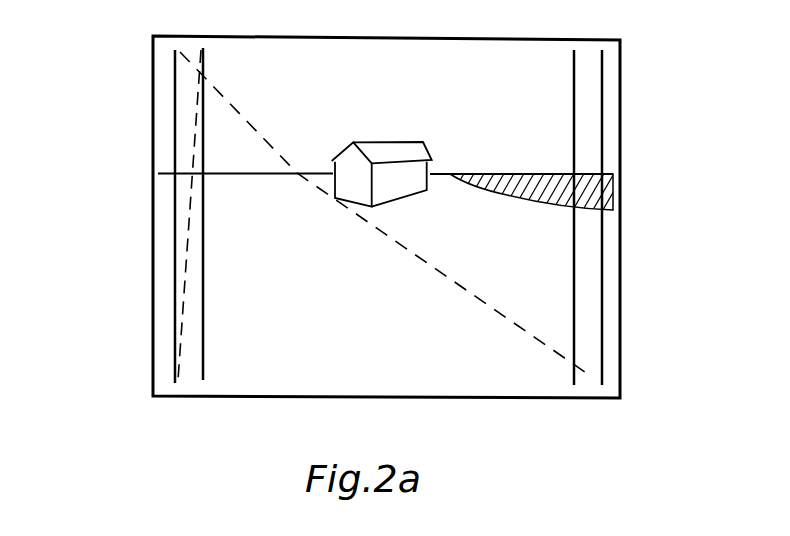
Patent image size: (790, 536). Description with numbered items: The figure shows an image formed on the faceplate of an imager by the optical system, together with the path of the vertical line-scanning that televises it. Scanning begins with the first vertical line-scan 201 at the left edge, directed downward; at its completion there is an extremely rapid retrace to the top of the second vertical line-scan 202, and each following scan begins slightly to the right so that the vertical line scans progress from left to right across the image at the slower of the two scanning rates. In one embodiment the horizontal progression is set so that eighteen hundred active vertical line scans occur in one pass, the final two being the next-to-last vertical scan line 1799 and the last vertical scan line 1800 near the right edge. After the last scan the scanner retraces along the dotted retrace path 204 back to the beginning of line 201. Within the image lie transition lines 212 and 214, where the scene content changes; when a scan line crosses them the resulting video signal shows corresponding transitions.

The first vertical line-scan 201 is at (174, 106).
The second vertical line-scan 202 is at (202, 197).
The retrace path 204 is at (498, 317).
The transition line 212 is at (258, 174).
The transition line 214 is at (550, 200).
The next-to-last vertical scan line 1799 is at (574, 78).
The last vertical scan line 1800 is at (602, 137).